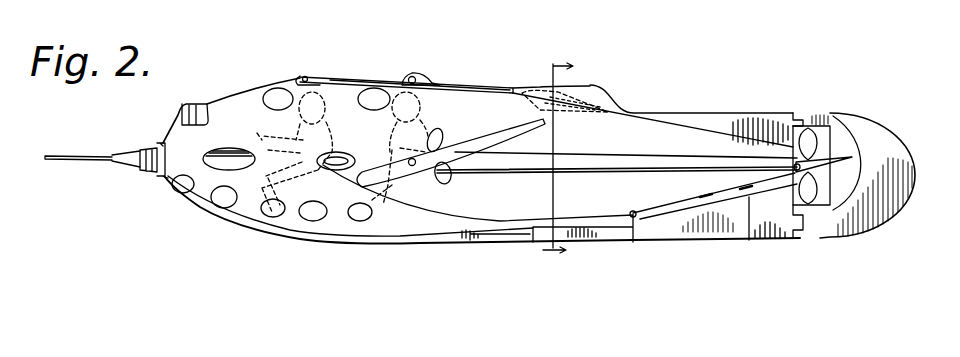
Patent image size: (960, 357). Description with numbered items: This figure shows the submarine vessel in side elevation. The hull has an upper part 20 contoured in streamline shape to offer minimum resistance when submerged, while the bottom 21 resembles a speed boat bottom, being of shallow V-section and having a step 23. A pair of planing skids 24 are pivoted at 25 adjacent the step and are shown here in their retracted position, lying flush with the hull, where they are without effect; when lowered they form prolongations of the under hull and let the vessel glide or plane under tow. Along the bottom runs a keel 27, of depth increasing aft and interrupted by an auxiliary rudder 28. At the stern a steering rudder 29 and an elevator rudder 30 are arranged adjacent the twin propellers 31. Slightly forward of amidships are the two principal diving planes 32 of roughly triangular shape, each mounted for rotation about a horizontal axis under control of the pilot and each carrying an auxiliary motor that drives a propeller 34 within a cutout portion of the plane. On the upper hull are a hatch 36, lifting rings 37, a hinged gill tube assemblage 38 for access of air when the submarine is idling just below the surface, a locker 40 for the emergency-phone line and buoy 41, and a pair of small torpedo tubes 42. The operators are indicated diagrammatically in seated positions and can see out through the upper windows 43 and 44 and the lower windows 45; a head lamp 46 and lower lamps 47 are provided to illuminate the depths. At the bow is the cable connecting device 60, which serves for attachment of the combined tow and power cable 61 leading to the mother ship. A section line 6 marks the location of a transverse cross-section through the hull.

The section line 6- 6 is at (558, 156).
The upper part of hull 20 is at (246, 82).
The bottom 21 is at (330, 258).
The step 23 is at (637, 219).
The planing skids 24 is at (749, 241).
The pivot 25 is at (631, 218).
The keel 27 is at (508, 241).
The auxiliary rudder 28 is at (593, 239).
The steering rudder 29 is at (879, 135).
The elevator rudder 30 is at (823, 125).
The twin propellers 31 is at (824, 210).
The diving planes 32 is at (445, 183).
The propeller 34 is at (442, 138).
The hatch 36 is at (336, 78).
The lifting rings 37 is at (341, 145).
The hinged gill tube assemblage 38 is at (484, 86).
The locker 40 is at (604, 88).
The buoy 41 is at (546, 86).
The torpedo tubes 42 is at (228, 154).
The upper window 43 is at (279, 88).
The upper window 44 is at (379, 88).
The lower windows 45 is at (215, 204).
The head lamp 46 is at (181, 113).
The lower lamps 47 is at (177, 188).
The cable connecting device 60 is at (140, 164).
The combined tow and power cable 61 is at (56, 162).